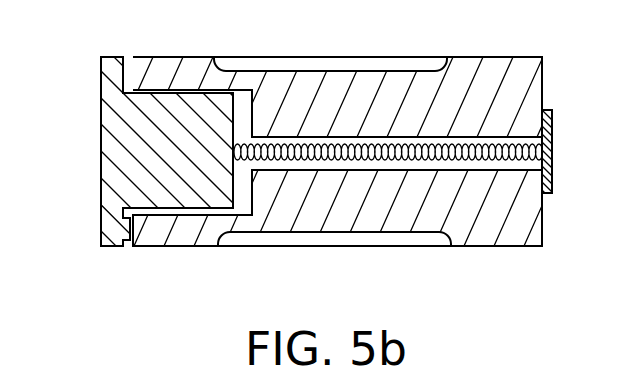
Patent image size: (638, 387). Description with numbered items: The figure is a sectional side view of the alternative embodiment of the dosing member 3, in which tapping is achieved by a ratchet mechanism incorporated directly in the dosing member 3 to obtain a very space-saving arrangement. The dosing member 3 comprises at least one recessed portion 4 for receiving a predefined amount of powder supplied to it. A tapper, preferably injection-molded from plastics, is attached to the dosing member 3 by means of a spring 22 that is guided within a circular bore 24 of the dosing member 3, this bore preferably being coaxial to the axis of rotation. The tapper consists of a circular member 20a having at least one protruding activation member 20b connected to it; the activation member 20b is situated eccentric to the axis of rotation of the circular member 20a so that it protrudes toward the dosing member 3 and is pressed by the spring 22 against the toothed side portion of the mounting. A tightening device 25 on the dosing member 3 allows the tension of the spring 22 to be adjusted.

The dosing member 3 is at (488, 74).
The recessed portion 4 is at (383, 66).
The circular member 20a is at (121, 137).
The activation member 20b is at (118, 219).
The spring 22 is at (333, 150).
The circular bore 24 is at (512, 130).
The tightening device 25 is at (555, 131).